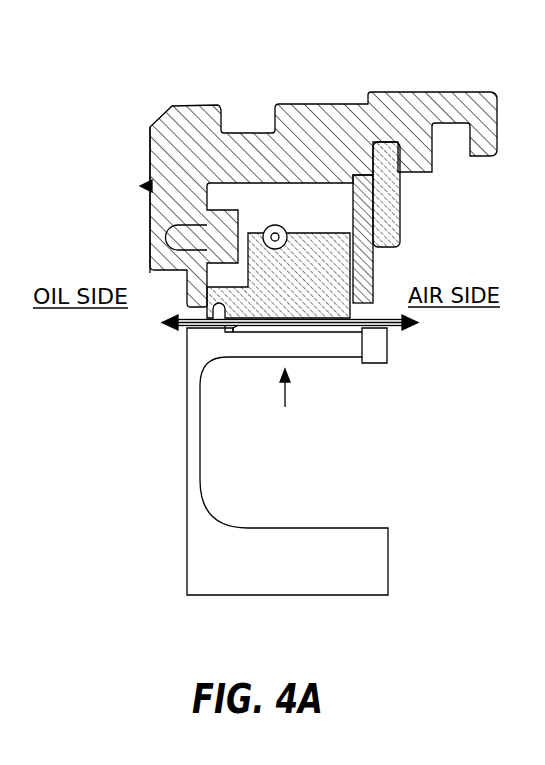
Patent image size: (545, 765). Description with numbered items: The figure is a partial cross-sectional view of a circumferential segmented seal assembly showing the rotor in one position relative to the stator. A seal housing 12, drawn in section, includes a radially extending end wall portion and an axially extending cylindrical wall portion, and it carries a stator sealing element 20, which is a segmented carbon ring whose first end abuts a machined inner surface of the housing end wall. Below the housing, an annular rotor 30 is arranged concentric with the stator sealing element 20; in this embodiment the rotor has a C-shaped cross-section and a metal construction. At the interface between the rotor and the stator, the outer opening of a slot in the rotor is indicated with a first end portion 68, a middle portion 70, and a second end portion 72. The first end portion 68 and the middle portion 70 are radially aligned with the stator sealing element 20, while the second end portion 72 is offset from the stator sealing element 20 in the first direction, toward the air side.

The seal housing 12 is at (430, 93).
The stator sealing element 20 is at (322, 232).
The annular rotor 30 is at (368, 563).
The first end portion 68 is at (235, 331).
The middle portion 70 is at (265, 331).
The second end portion 72 is at (340, 330).